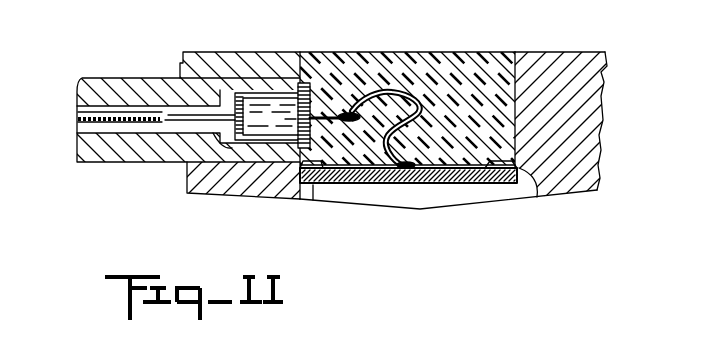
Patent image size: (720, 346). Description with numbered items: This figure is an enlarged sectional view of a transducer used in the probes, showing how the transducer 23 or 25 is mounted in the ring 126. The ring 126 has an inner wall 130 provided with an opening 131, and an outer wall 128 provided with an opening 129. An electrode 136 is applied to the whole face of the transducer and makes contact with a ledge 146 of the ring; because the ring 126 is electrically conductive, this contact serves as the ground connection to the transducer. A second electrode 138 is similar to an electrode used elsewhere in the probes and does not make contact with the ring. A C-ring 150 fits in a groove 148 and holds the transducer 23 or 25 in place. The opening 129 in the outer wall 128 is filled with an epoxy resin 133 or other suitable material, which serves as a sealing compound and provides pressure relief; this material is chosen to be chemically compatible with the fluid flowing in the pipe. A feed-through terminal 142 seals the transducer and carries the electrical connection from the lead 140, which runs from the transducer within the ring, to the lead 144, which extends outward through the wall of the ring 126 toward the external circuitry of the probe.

The ring 126 is at (582, 91).
The outer wall 128 is at (238, 52).
The opening 129 is at (357, 52).
The epoxy resin 133 is at (448, 83).
The lead 140 is at (384, 91).
The electrode 138 is at (420, 162).
The lead 144 is at (97, 106).
The feed-through terminal 142 is at (197, 166).
The inner wall 130 is at (228, 198).
The opening 131 is at (325, 192).
The electrode 136 is at (458, 184).
The ledge 146 is at (533, 181).
The groove 148 is at (525, 165).
The C-ring 150 is at (501, 159).
The transducer 23 is at (387, 184).
The transducer 25 is at (408, 175).